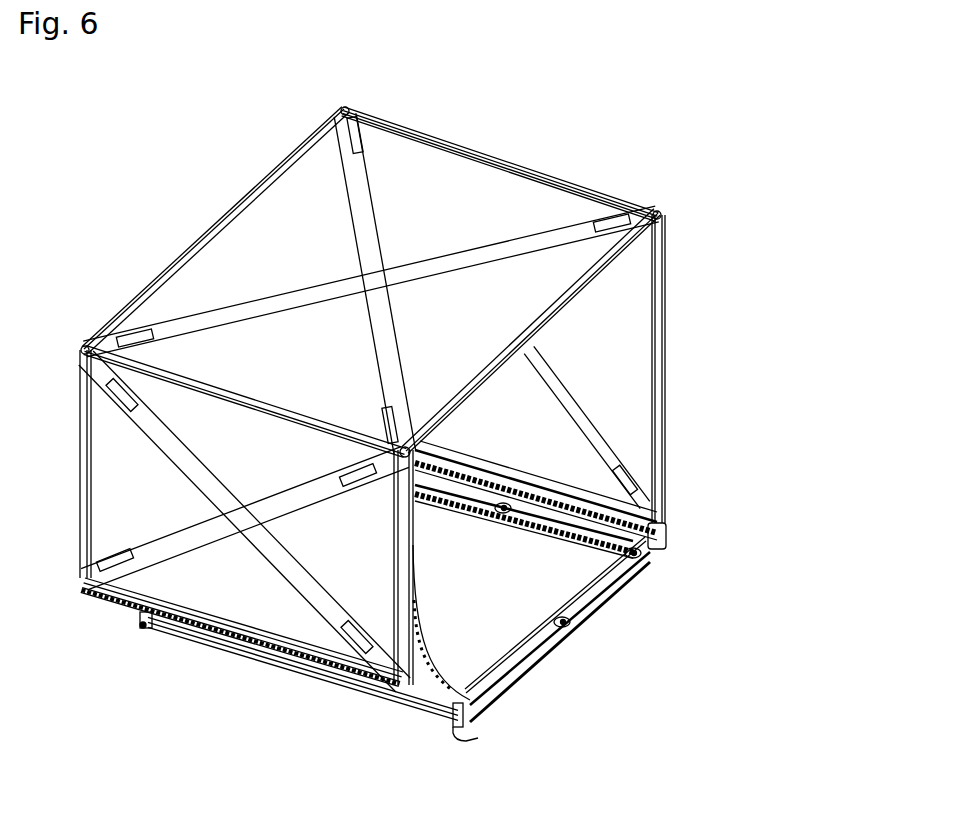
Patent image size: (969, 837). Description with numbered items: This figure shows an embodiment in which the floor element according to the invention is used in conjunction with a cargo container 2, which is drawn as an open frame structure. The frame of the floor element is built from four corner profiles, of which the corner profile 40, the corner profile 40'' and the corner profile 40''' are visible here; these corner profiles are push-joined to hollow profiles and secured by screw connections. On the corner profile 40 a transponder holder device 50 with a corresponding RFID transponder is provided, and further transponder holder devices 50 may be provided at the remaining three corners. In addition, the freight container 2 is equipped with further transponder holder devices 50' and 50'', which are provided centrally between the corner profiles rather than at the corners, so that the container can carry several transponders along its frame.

The container 2 is at (186, 156).
The corner profile 40 is at (639, 629).
The corner profile 40'' is at (239, 668).
The corner profile 40''' is at (405, 746).
The transponder holder device 50 is at (622, 632).
The transponder holder device 50' is at (627, 491).
The transponder holder device 50'' is at (558, 698).